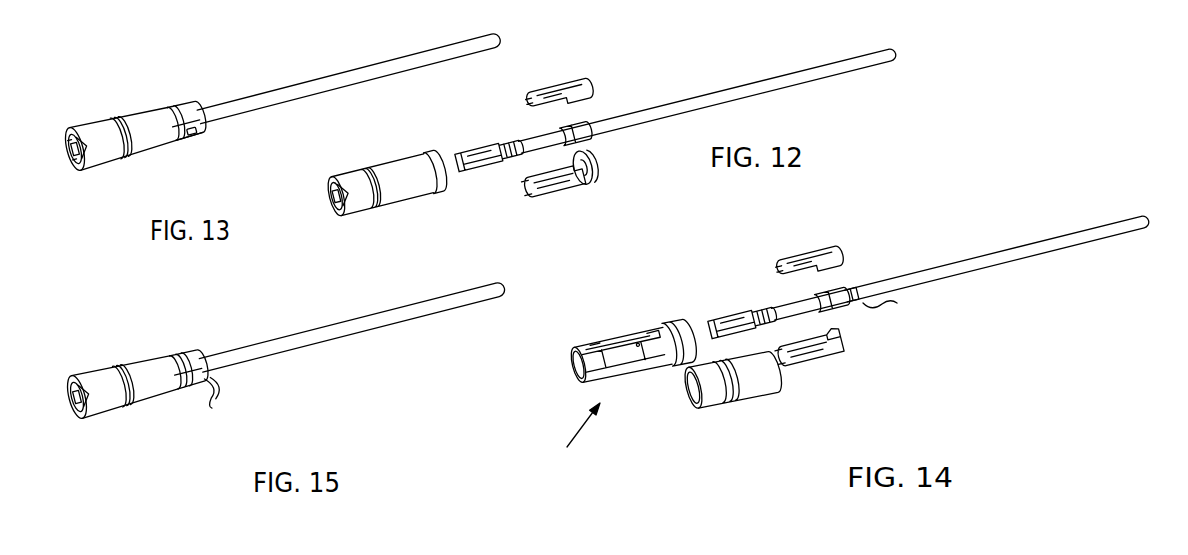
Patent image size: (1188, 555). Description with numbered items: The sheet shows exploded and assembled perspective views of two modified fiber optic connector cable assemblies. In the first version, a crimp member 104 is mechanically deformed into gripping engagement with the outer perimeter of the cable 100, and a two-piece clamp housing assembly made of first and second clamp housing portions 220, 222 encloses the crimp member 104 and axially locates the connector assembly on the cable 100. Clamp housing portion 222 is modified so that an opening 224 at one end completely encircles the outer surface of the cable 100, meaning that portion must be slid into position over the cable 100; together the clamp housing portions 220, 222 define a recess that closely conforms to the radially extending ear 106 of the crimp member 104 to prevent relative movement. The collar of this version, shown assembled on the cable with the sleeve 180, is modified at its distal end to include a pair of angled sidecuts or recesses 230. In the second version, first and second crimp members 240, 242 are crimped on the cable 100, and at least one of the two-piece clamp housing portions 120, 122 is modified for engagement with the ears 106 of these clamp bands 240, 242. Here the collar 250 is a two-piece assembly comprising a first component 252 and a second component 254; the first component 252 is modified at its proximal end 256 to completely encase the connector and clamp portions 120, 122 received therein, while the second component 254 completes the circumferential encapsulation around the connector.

In FIG. 13, the cable 100 is at (437, 56).
In FIG. 12, the cable 100 is at (747, 87).
In FIG. 15, the cable 100 is at (388, 318).
In FIG. 14, the cable 100 is at (1053, 243).
In FIG. 12, the crimp member 104 is at (560, 133).
In FIG. 13, the ear 106 is at (192, 141).
In FIG. 15, the ear 106 is at (225, 410).
In FIG. 14, the ear 106 is at (901, 305).
In FIG. 15, the clamp housing portion 120 is at (183, 357).
In FIG. 14, the clamp housing portion 120 is at (817, 250).
In FIG. 15, the clamp housing portion 122 is at (190, 387).
In FIG. 14, the clamp housing portion 122 is at (828, 362).
In FIG. 13, the connector housing sleeve 180 is at (142, 120).
In FIG. 12, the connector housing sleeve 180 is at (400, 173).
In FIG. 15, the connector housing sleeve 180 is at (128, 368).
In FIG. 13, the first clamp housing portion 220 is at (180, 107).
In FIG. 12, the first clamp housing portion 220 is at (556, 80).
In FIG. 13, the second clamp housing portion 222 is at (190, 140).
In FIG. 12, the second clamp housing portion 222 is at (583, 190).
In FIG. 12, the opening 224 is at (598, 165).
In FIG. 13, the angled sidecuts 230 is at (95, 172).
In FIG. 12, the angled sidecuts 230 is at (357, 213).
In FIG. 14, the first crimp member 240 is at (832, 288).
In FIG. 14, the second crimp member 242 is at (854, 290).
In FIG. 14, the collar 250 is at (578, 443).
In FIG. 14, the first component 252 is at (613, 330).
In FIG. 14, the second component 254 is at (750, 397).
In FIG. 14, the proximal end 256 is at (675, 323).